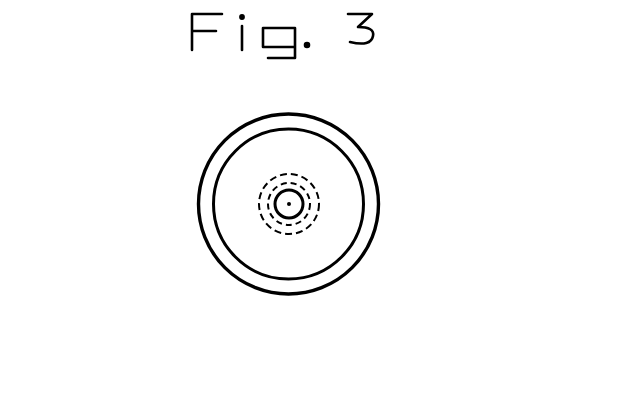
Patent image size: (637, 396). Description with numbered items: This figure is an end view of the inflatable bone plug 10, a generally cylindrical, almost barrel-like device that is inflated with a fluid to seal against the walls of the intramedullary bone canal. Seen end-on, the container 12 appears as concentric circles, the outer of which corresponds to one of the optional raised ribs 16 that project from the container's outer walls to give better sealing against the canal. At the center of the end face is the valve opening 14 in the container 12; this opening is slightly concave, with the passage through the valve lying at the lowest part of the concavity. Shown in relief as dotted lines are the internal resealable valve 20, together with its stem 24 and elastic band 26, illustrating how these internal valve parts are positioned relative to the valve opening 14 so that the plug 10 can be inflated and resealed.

The inflatable bone plug 10 is at (150, 185).
The container 12 is at (333, 235).
The valve opening 14 is at (289, 204).
The raised rib 16 is at (375, 196).
The resealable valve 20 is at (297, 240).
The stem 24 is at (280, 188).
The elastic band 26 is at (305, 182).